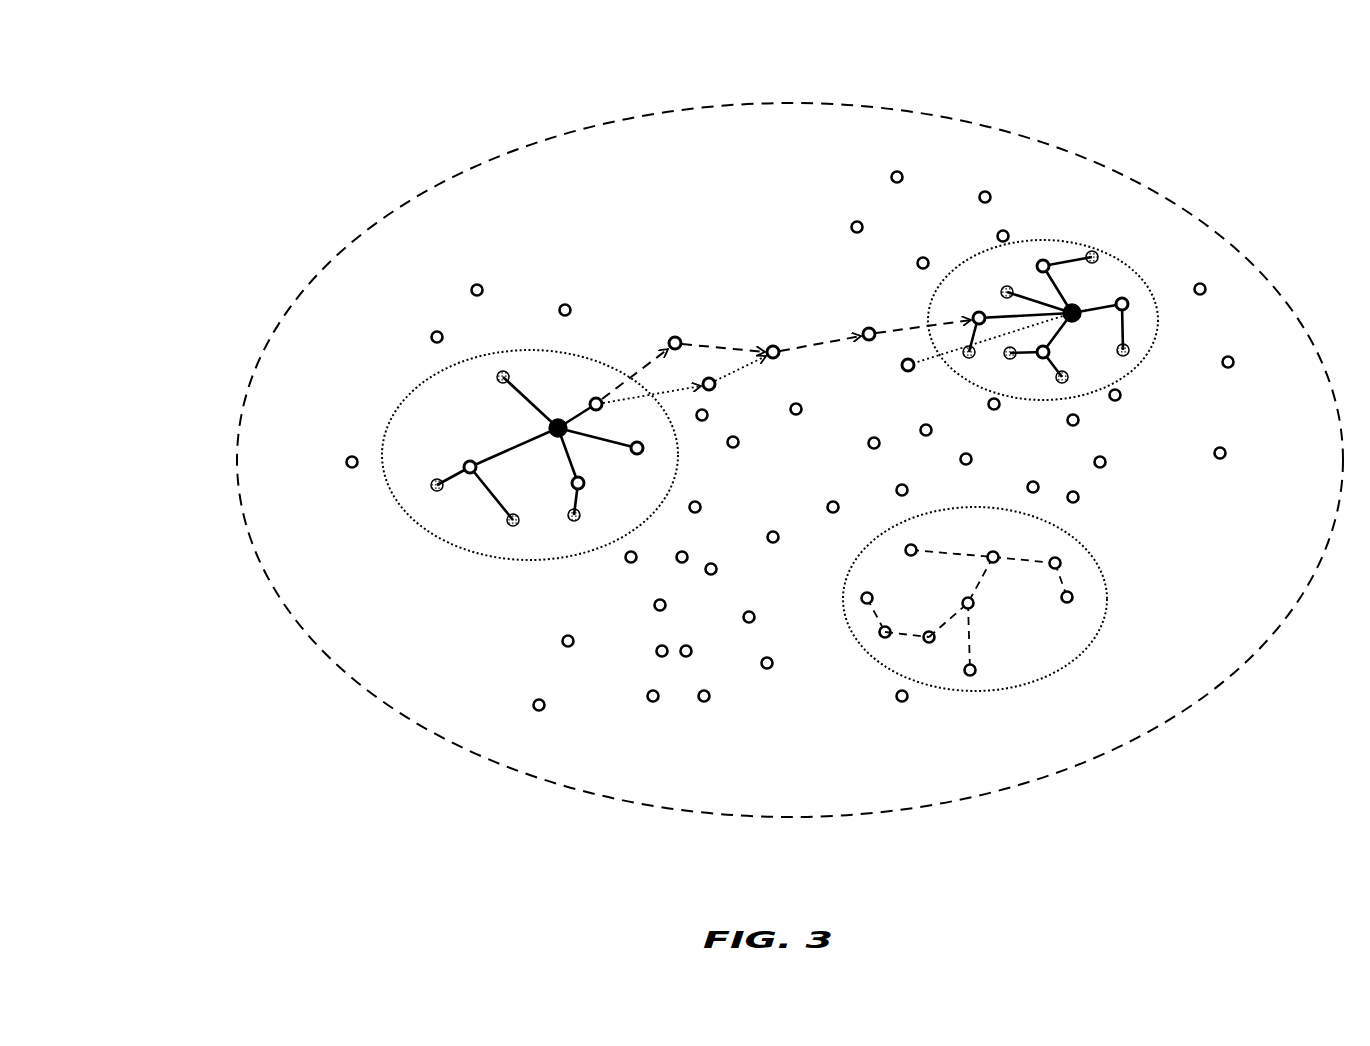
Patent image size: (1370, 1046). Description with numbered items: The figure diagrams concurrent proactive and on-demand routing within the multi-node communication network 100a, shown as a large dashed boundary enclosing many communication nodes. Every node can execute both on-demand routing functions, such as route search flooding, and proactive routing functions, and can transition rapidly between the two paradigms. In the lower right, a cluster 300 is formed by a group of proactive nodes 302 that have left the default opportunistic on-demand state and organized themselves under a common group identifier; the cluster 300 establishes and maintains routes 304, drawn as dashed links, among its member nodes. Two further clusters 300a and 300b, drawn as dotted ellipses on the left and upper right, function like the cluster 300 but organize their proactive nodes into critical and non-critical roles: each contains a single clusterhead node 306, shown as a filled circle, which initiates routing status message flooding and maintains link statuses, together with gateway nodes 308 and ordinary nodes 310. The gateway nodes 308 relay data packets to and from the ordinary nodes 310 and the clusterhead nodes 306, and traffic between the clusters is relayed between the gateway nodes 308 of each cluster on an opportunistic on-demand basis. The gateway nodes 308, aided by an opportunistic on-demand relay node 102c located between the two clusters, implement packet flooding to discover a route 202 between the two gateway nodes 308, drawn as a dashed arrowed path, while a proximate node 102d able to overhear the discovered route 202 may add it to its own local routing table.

The multi-node communication network 100a is at (168, 139).
The cluster 300a is at (425, 378).
The cluster 300b is at (1043, 240).
The cluster 300 is at (1068, 665).
The proactive nodes 302 is at (977, 673).
The routes 304 is at (950, 620).
The clusterhead node 306 is at (555, 419).
The gateway node 308 is at (596, 396).
The ordinary node 310 is at (500, 371).
The opportunistic on-demand relay node 102c is at (674, 335).
The proximate node 102d is at (709, 376).
The discovered route 202 is at (810, 343).